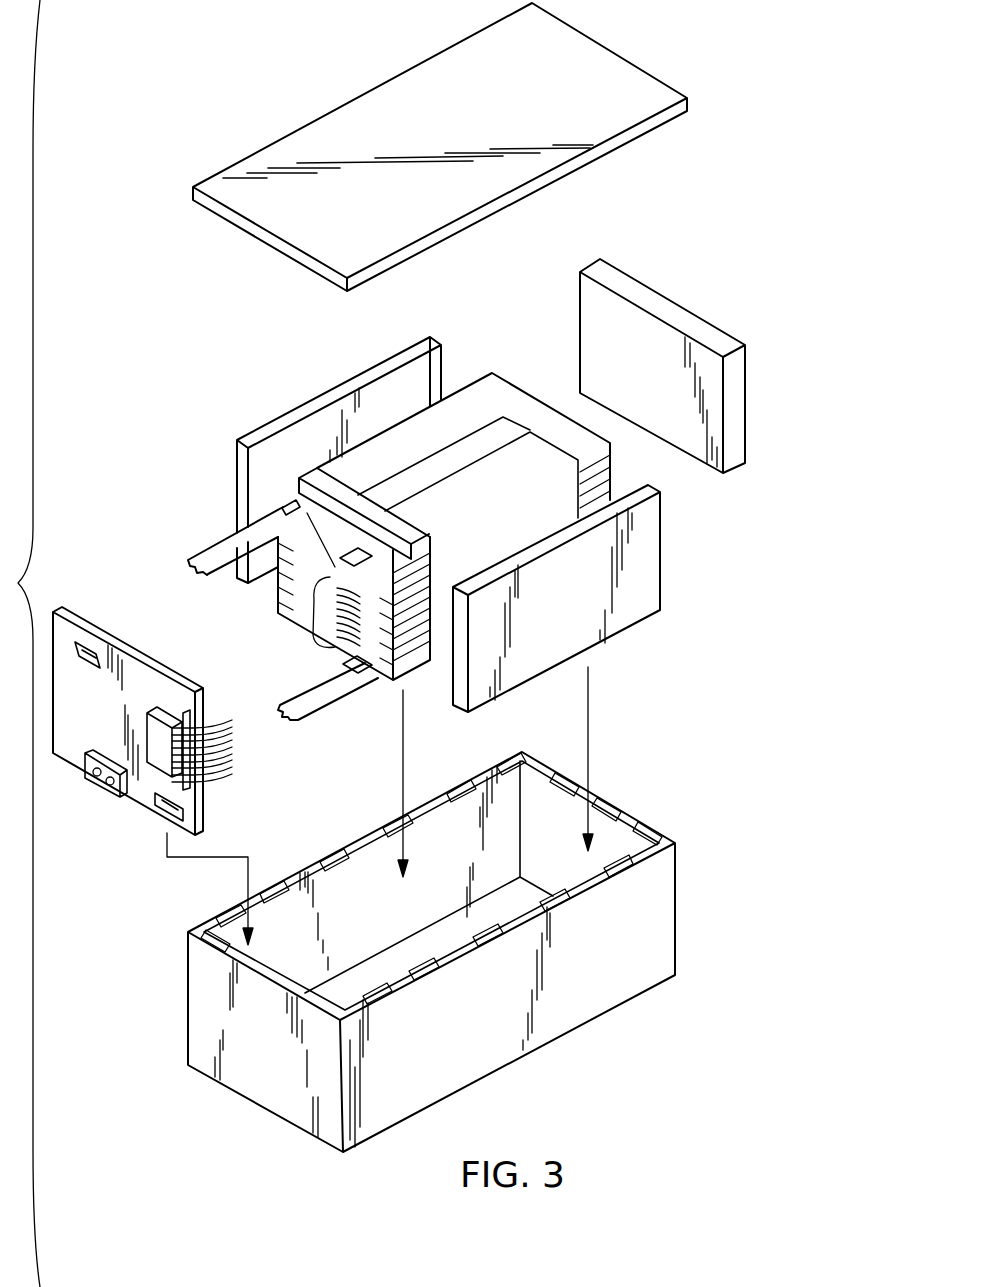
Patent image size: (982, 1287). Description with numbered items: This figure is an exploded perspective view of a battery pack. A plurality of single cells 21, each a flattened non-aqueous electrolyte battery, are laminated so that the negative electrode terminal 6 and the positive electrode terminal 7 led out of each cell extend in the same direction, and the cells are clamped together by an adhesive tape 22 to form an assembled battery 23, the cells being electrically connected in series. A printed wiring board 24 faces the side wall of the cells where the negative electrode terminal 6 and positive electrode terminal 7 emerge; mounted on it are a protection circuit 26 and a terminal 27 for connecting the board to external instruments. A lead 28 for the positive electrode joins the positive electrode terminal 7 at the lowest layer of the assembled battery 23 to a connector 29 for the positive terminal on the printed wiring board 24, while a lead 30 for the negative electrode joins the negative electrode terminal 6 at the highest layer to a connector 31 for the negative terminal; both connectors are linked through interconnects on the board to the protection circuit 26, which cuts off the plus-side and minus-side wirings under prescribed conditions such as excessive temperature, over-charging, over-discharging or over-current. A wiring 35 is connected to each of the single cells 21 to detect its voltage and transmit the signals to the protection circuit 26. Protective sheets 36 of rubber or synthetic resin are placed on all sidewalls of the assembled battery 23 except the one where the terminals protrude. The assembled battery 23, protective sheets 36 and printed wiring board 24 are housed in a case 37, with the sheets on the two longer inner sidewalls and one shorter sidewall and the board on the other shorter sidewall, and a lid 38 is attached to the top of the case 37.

The negative electrode terminal 6 is at (280, 506).
The positive electrode terminal 7 is at (380, 703).
The single cells 21 is at (627, 490).
The adhesive tape 22 is at (467, 423).
The assembled battery 23 is at (389, 441).
The printed wiring board 24 is at (89, 616).
The protection circuit 26 is at (162, 707).
The terminal 27 is at (110, 790).
The lead for the positive electrode 28 is at (320, 702).
The connector for the positive terminal 29 is at (195, 810).
The lead for the negative electrode 30 is at (200, 552).
The connector for the negative terminal 31 is at (92, 648).
The wiring 35 is at (312, 608).
The protective sheet 36 is at (302, 417).
The case 37 is at (663, 915).
The lid 38 is at (627, 82).